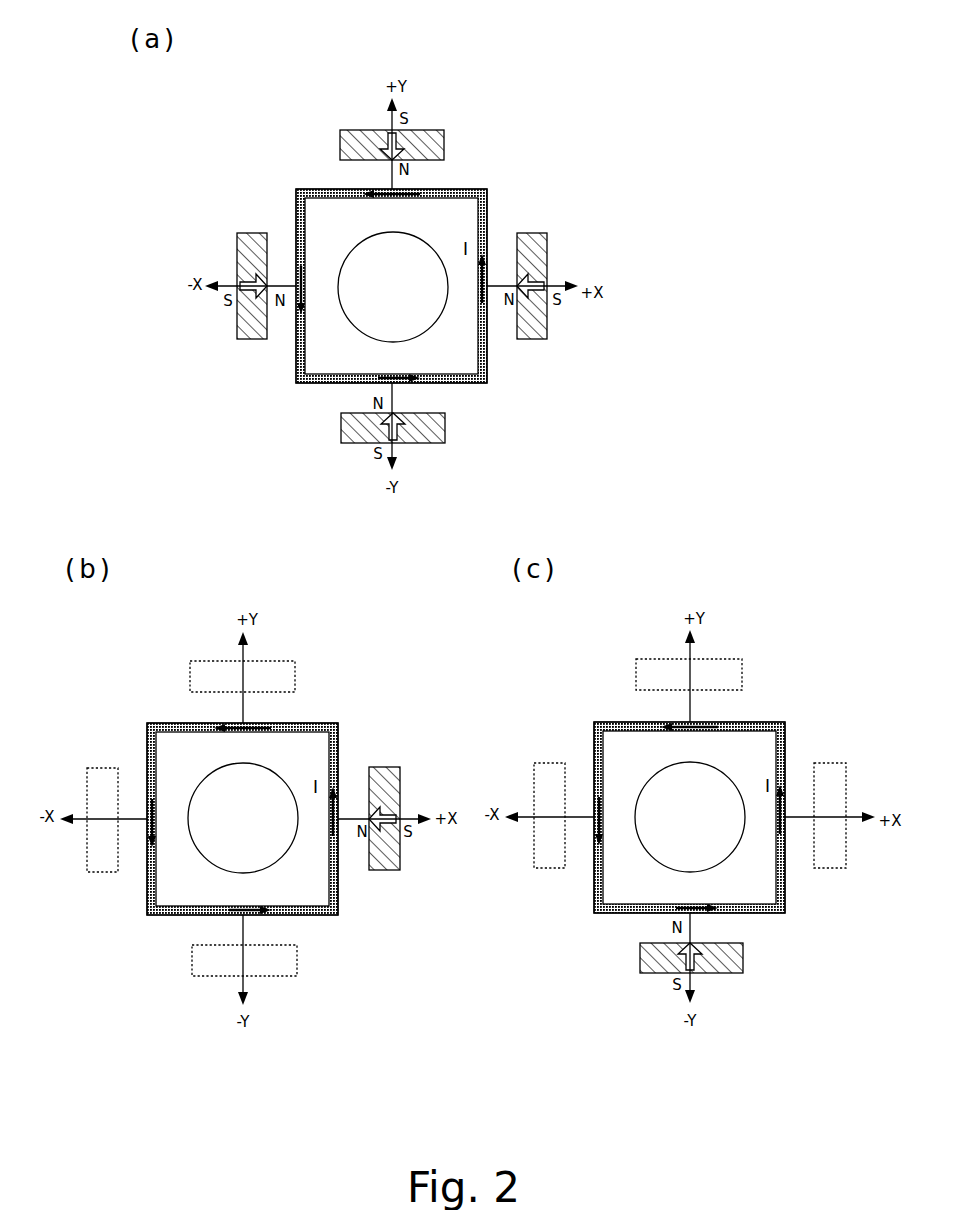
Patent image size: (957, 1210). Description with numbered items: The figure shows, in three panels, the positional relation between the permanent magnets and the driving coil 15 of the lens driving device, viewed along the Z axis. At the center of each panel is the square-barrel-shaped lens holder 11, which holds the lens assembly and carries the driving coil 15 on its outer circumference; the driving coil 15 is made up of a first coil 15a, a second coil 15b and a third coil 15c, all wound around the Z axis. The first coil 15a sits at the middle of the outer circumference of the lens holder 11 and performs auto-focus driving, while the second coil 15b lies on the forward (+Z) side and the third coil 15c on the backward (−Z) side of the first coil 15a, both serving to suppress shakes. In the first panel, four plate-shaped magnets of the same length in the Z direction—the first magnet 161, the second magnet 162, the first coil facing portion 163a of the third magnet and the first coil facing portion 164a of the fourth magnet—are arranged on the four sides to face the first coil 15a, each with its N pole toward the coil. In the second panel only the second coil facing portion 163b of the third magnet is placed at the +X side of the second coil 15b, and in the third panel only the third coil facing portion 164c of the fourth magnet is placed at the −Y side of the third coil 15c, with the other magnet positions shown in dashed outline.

The lens holder 11 is at (452, 220).
The driving coil 15 is at (450, 190).
The first coil 15a is at (487, 364).
The second coil 15b is at (340, 897).
The third coil 15c is at (748, 912).
The first magnet 161 is at (243, 240).
The second magnet 162 is at (428, 130).
The first coil facing portion of the third magnet 163a is at (530, 258).
The second coil facing portion of the third magnet 163b is at (382, 869).
The first coil facing portion of the fourth magnet 164a is at (444, 426).
The third coil facing portion of the fourth magnet 164c is at (743, 948).